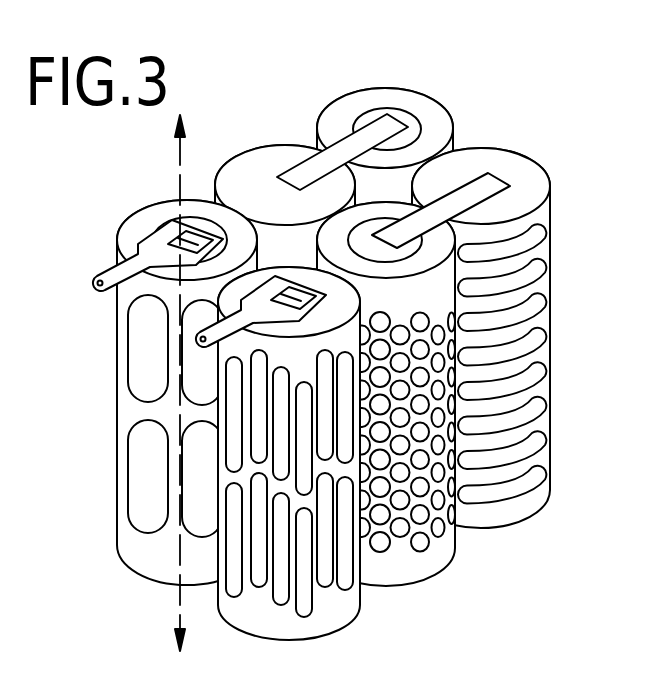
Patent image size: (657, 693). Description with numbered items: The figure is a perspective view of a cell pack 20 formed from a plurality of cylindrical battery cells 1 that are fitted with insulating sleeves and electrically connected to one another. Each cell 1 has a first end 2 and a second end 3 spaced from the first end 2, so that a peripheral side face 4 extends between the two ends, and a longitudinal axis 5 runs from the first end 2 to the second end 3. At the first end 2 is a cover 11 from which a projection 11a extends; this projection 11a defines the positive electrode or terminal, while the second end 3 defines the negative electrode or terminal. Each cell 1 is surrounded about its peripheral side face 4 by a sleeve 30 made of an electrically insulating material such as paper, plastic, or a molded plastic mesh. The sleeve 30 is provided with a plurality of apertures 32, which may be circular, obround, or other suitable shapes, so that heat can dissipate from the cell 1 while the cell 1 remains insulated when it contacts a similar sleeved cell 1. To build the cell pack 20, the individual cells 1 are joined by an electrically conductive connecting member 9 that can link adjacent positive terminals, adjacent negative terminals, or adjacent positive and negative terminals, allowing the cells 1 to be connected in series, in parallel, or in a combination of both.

The cell 1 is at (567, 270).
The first end 2 is at (365, 99).
The second end 3 is at (262, 168).
The peripheral side face 4 is at (118, 395).
The longitudinal axis 5 is at (183, 614).
The connecting member 9 is at (478, 185).
The cover 11 is at (146, 210).
The projection 11a is at (405, 120).
The cell pack 20 is at (284, 90).
The sleeve 30 is at (325, 617).
The apertures 32 is at (148, 497).